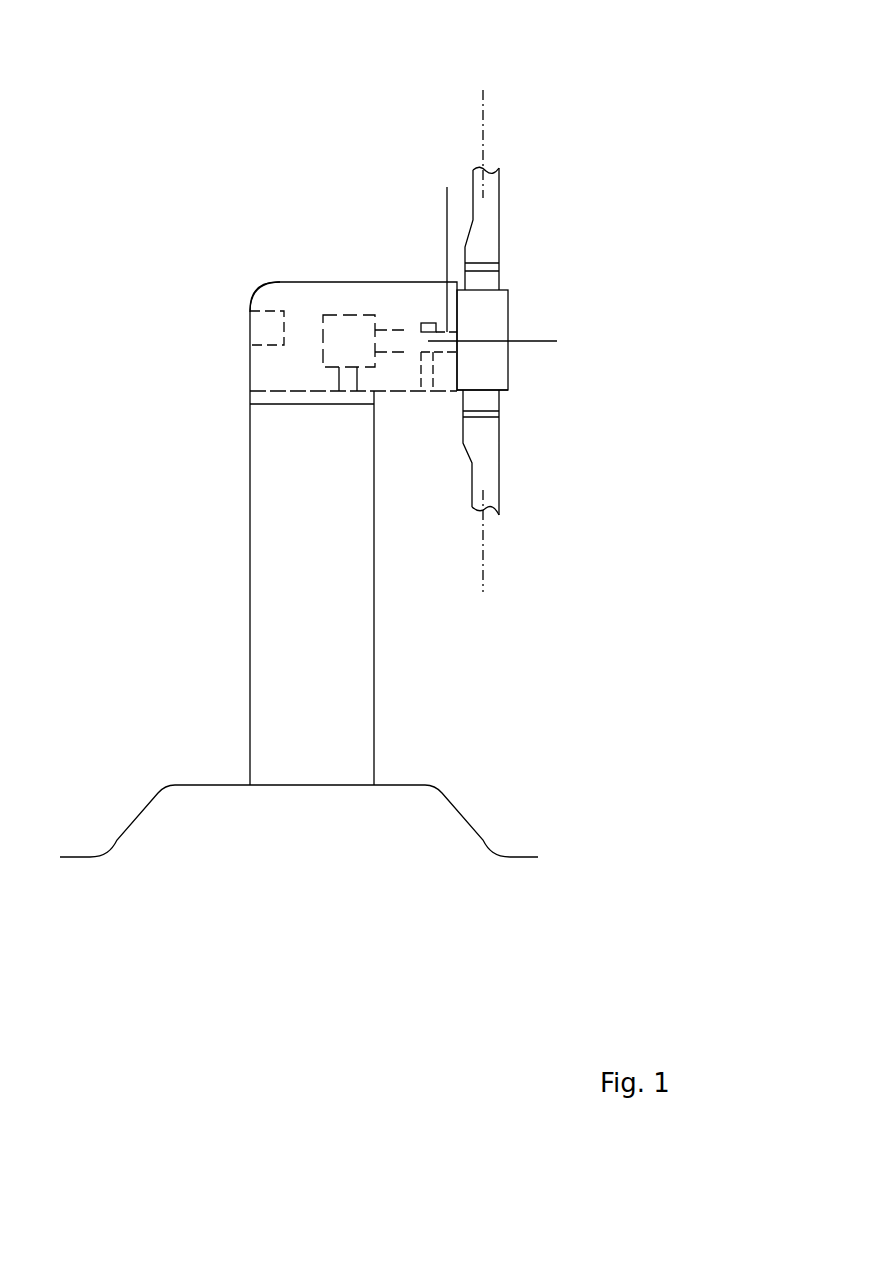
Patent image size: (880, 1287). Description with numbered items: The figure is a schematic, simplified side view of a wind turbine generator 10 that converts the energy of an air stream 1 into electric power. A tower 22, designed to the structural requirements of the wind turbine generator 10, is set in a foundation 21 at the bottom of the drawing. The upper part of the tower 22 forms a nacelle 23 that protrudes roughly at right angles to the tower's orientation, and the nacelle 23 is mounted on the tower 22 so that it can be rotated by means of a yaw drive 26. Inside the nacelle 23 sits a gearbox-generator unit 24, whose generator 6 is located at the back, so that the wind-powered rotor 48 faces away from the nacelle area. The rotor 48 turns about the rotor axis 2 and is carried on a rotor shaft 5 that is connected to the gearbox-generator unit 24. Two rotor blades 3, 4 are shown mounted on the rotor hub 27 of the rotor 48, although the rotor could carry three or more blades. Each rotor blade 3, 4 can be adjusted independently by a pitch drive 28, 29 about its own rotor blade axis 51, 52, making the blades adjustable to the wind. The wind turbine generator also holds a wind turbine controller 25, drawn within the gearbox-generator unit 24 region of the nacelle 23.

The air stream 1 is at (565, 289).
The rotor axis 2 is at (528, 343).
The rotor blade 3 is at (483, 225).
The rotor blade 4 is at (485, 483).
The rotor shaft 5 is at (439, 275).
The generator 6 is at (337, 323).
The wind turbine generator 10 is at (400, 628).
The foundation 21 is at (185, 820).
The tower 22 is at (272, 687).
The nacelle 23 is at (273, 290).
The gearbox-generator unit 24 is at (387, 300).
The wind turbine controller 25 is at (267, 328).
The yaw drive 26 is at (272, 399).
The rotor hub 27 is at (488, 373).
The pitch drive 28 is at (490, 268).
The pitch drive 29 is at (477, 418).
The rotor 48 is at (512, 322).
The rotor blade axis 51 is at (485, 108).
The rotor blade axis 52 is at (483, 557).